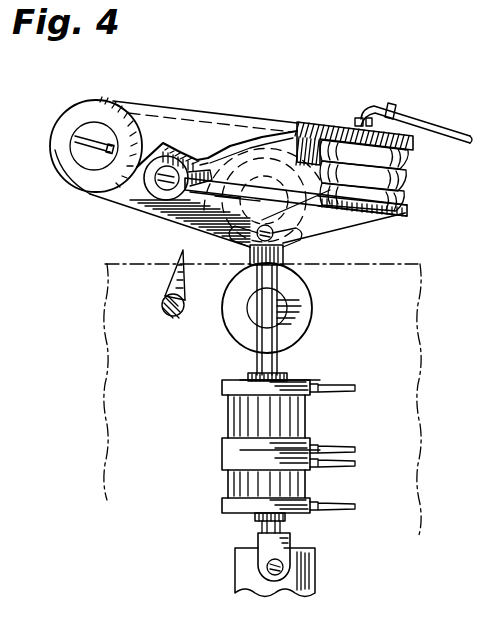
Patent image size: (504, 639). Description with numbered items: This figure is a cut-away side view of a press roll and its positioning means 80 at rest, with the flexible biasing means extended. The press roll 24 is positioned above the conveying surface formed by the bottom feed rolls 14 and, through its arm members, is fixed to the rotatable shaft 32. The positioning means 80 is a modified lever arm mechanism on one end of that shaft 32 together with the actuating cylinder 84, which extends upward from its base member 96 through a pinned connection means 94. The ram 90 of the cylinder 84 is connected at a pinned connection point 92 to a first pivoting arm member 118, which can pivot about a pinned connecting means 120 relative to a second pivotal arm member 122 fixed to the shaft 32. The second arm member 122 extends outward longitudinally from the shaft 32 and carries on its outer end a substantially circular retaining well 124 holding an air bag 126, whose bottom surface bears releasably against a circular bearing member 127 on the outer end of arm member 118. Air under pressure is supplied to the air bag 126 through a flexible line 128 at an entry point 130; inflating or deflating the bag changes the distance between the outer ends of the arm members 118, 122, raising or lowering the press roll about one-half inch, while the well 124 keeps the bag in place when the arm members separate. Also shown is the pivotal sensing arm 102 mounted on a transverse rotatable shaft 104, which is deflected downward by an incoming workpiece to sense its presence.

The bottom feed roll 14 is at (262, 401).
The first press roll 24 is at (235, 262).
The rotatable shaft 32 is at (56, 166).
The press roll positioning means 80 is at (330, 292).
The first actuating cylinder 84 is at (310, 416).
The ram 90 is at (290, 336).
The pinned connection point 92 is at (285, 239).
The pinned connection means 94 is at (280, 565).
The base member 96 is at (312, 580).
The pivotal sensing arm 102 is at (180, 258).
The rotatable shaft 104 is at (177, 316).
The first pivoting arm member 118 is at (225, 148).
The pinned connecting means 120 is at (144, 203).
The second pivotal arm member 122 is at (207, 113).
The retaining well 124 is at (414, 150).
The air bag 126 is at (405, 184).
The circular bearing member 127 is at (408, 212).
The flexible line 128 is at (426, 116).
The entry point 130 is at (358, 116).